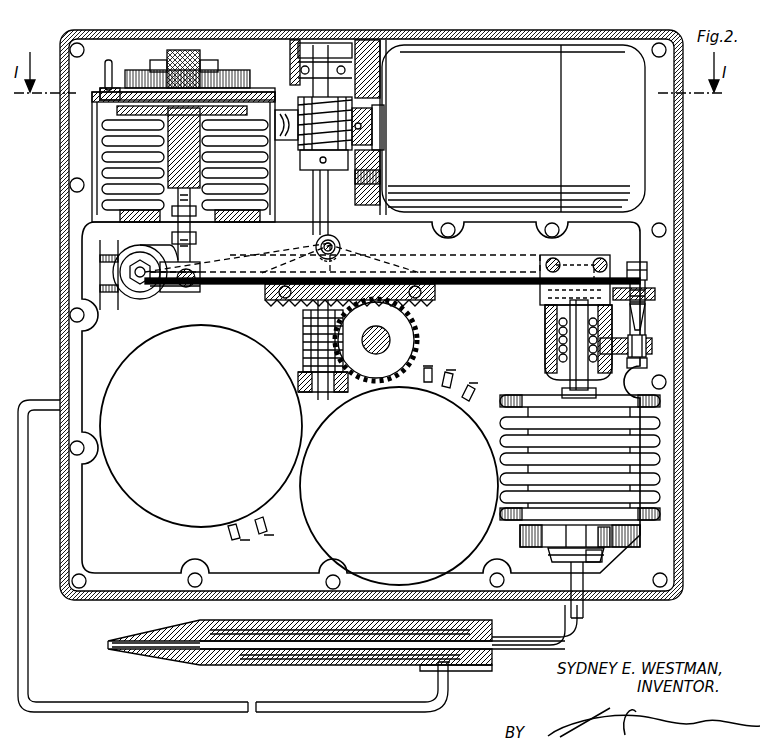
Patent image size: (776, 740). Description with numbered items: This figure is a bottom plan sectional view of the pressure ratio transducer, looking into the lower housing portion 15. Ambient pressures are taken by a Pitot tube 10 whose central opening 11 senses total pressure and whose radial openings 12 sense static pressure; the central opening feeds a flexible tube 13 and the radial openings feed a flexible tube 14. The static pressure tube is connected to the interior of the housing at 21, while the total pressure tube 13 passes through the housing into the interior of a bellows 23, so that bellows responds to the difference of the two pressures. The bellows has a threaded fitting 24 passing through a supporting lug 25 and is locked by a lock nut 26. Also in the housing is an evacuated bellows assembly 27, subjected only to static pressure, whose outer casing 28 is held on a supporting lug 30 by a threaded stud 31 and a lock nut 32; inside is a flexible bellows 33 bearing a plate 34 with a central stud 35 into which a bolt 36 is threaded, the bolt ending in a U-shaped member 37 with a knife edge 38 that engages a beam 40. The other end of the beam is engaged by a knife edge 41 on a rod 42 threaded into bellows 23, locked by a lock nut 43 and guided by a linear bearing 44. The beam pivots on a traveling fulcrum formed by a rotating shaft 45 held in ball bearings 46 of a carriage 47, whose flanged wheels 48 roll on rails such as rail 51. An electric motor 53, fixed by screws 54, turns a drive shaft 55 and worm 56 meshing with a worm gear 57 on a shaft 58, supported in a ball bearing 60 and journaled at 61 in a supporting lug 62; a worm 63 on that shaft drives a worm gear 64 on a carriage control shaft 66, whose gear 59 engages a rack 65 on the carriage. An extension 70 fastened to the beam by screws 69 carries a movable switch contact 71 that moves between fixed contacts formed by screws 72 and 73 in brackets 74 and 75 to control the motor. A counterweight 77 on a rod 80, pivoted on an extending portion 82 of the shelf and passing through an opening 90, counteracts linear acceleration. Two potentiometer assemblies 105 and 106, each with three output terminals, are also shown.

The Pitot tube 10 is at (186, 668).
The central opening 11 is at (140, 648).
The radial openings 12 is at (240, 665).
The flexible tube 13 is at (580, 630).
The flexible tube 14 is at (322, 715).
The lower housing portion 15 is at (676, 330).
The static pressure tube connection 21 is at (58, 402).
The bellows 23 is at (662, 438).
The fitting 24 is at (556, 562).
The supporting lug 25 is at (612, 540).
The lock nut 26 is at (598, 566).
The evacuated bellows assembly 27 is at (163, 159).
The outer casing 28 is at (272, 190).
The supporting lug 30 is at (226, 70).
The threaded stud 31 is at (196, 54).
The lock nut 32 is at (156, 60).
The flexible bellows 33 is at (268, 209).
The plate 34 is at (248, 88).
The central stud 35 is at (268, 172).
The bolt 36 is at (196, 236).
The U-shaped member 37 is at (197, 288).
The knife edge 38 is at (192, 272).
The beam 40 is at (490, 285).
The knife edge 41 is at (565, 270).
The rod 42 is at (570, 352).
The lock nut 43 is at (550, 390).
The linear bearing 44 is at (538, 334).
The rotating shaft 45 is at (342, 246).
The ball bearings 46 is at (340, 236).
The carriage 47 is at (405, 272).
The flanged wheels 48 is at (272, 304).
The rail 51 is at (520, 262).
The electric motor 53 is at (538, 48).
The screws 54 is at (382, 168).
The drive shaft 55 is at (378, 122).
The worm 56 is at (370, 110).
The worm gear 57 is at (300, 112).
The shaft 58 is at (330, 200).
The gear 59 is at (393, 351).
The ball bearing 60 is at (336, 50).
The journal 61 is at (310, 400).
The supporting lug 62 is at (342, 398).
The worm 63 is at (303, 336).
The worm gear 64 is at (394, 338).
The rack 65 is at (412, 318).
The carriage control shaft 66 is at (395, 350).
The screws 69 is at (584, 254).
The extension 70 is at (652, 272).
The movable switch contact 71 is at (648, 312).
The screw 72 is at (652, 365).
The screw 73 is at (648, 266).
The bracket 74 is at (654, 342).
The bracket 75 is at (655, 292).
The counterweight 77 is at (160, 296).
The rod 80 is at (138, 278).
The extending portion 82 is at (100, 262).
The opening 90 is at (144, 292).
The potentiometer assembly 105 is at (140, 502).
The potentiometer assembly 106 is at (320, 530).